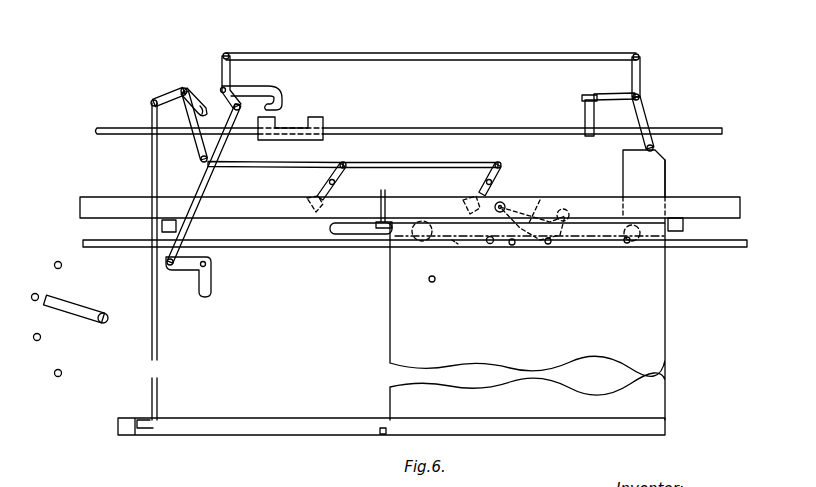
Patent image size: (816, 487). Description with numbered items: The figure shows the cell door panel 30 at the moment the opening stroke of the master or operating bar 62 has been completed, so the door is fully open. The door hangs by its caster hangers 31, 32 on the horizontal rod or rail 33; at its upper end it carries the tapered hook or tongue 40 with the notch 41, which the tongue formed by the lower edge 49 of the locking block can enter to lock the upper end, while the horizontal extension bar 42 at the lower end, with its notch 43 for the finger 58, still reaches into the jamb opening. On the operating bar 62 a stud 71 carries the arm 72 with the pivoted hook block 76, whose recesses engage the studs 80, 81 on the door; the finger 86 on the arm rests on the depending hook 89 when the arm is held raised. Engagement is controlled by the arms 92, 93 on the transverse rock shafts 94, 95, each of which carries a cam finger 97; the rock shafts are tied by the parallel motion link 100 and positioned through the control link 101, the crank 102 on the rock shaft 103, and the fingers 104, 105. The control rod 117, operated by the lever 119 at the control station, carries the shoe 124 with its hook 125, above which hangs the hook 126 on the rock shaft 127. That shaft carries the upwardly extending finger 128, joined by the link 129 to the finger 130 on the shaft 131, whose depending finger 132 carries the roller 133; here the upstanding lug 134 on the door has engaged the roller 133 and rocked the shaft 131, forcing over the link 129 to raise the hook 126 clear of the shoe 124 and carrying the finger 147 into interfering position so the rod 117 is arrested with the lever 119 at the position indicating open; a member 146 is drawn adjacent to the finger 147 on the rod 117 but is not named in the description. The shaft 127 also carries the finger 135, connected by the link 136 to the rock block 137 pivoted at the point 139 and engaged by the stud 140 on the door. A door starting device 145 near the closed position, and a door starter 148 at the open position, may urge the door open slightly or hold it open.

The door panel 30 is at (527, 290).
The caster hanger 31 is at (455, 245).
The caster hanger 32 is at (622, 240).
The horizontal rod or rail 33 is at (315, 247).
The tapered hook or tongue 40 is at (350, 238).
The notch 41 is at (383, 192).
The horizontal extension bar 42 is at (322, 418).
The notch 43 is at (380, 434).
The lower edge of block 49 is at (160, 211).
The finger 58 is at (152, 435).
The master or operating bar 62 is at (262, 208).
The stud 71 is at (503, 200).
The arm 72 is at (530, 212).
The hook block 76 is at (566, 210).
The stud 80 is at (551, 245).
The stud 81 is at (490, 244).
The finger 86 is at (512, 246).
The hook 89 is at (500, 240).
The arm 92 is at (338, 164).
The arm 93 is at (494, 165).
The transverse rock shaft 94 is at (318, 185).
The transverse rock shaft 95 is at (476, 181).
The cam finger 97 is at (462, 202).
The parallel motion link 100 is at (408, 162).
The control link 101 is at (278, 163).
The finger or crank 102 is at (199, 150).
The transverse rock shaft 103 is at (182, 86).
The downwardly depending finger 104 is at (205, 96).
The forwardly extending finger 105 is at (158, 98).
The control rod 117 is at (455, 128).
The lever 119 is at (80, 301).
The shoe 124 is at (322, 138).
The hook 125 is at (318, 120).
The hook 126 is at (268, 92).
The rock shaft 127 is at (232, 88).
The upwardly extending finger 128 is at (224, 53).
The link 129 is at (394, 53).
The finger 130 is at (642, 76).
The shaft 131 is at (642, 97).
The downwardly depending finger 132 is at (647, 124).
The roller 133 is at (656, 148).
The upstanding lug or member 134 is at (644, 184).
The finger 135 is at (224, 108).
The link 136 is at (207, 170).
The rock block 137 is at (185, 270).
The pivot point 139 is at (208, 264).
The stud 140 is at (430, 283).
The door starting device 145 is at (168, 219).
The clamp block 146 is at (580, 100).
The finger 147 is at (598, 94).
The door starter 148 is at (682, 216).